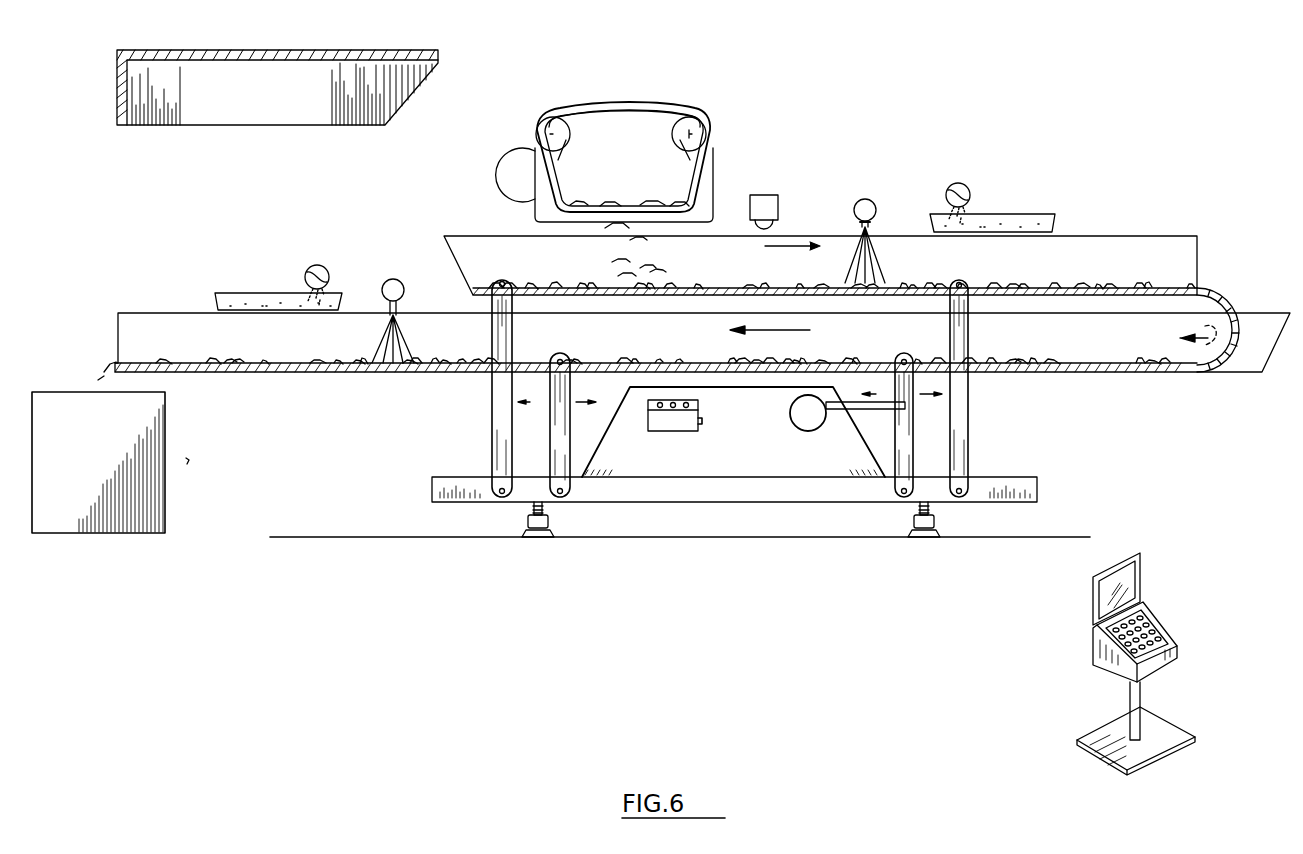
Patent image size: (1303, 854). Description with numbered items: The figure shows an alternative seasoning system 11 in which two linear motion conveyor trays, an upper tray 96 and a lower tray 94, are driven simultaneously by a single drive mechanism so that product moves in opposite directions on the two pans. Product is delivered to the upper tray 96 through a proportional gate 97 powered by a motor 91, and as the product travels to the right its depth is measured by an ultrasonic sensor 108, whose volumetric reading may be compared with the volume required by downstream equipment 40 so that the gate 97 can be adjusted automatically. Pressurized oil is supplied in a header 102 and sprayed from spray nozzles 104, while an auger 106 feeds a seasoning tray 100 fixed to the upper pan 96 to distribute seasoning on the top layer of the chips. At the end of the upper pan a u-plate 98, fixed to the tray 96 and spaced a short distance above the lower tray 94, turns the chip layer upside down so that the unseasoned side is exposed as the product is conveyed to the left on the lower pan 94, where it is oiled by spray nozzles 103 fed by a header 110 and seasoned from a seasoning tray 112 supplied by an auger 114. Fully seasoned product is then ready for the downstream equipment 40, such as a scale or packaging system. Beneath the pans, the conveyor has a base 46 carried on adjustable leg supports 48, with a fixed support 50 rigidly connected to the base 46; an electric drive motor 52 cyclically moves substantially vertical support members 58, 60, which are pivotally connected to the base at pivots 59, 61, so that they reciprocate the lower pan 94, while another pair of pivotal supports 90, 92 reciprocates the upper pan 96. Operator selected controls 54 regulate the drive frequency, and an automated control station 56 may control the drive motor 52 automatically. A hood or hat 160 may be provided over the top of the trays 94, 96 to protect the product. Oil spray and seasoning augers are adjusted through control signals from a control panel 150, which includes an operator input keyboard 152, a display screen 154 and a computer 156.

The hood or hat 160 is at (335, 48).
The proportional gate 97 is at (595, 105).
The motor 91 is at (522, 152).
The seasoning system 11 is at (455, 182).
The upper tray 96 is at (1100, 262).
The spray nozzles 103 is at (491, 260).
The u-plate 98 is at (1230, 285).
The lower tray 94 is at (1063, 372).
The pivotal support 92 is at (428, 395).
The seasoning tray 112 is at (270, 293).
The auger 114 is at (317, 265).
The seasoning tray 100 is at (1022, 230).
The auger 106 is at (962, 190).
The header 110 is at (393, 278).
The header 102 is at (864, 200).
The spray nozzles 104 is at (868, 224).
The ultrasonic sensor 108 is at (768, 196).
The fixed support 50 is at (785, 464).
The base 46 is at (755, 500).
The adjustable leg supports 48 is at (532, 515).
The support member 60 is at (505, 422).
The pivot 61 is at (538, 474).
The support member 58 is at (903, 457).
The pivotal support 90 is at (962, 437).
The pivot 59 is at (895, 490).
The automated control station 56 is at (685, 421).
The operator selected controls 54 is at (672, 398).
The electric drive motor 52 is at (797, 418).
The downstream equipment 40 is at (150, 425).
The control panel 150 is at (1106, 664).
The display screen 154 is at (1143, 580).
The operator input keyboard 152 is at (1152, 622).
The computer 156 is at (1172, 655).